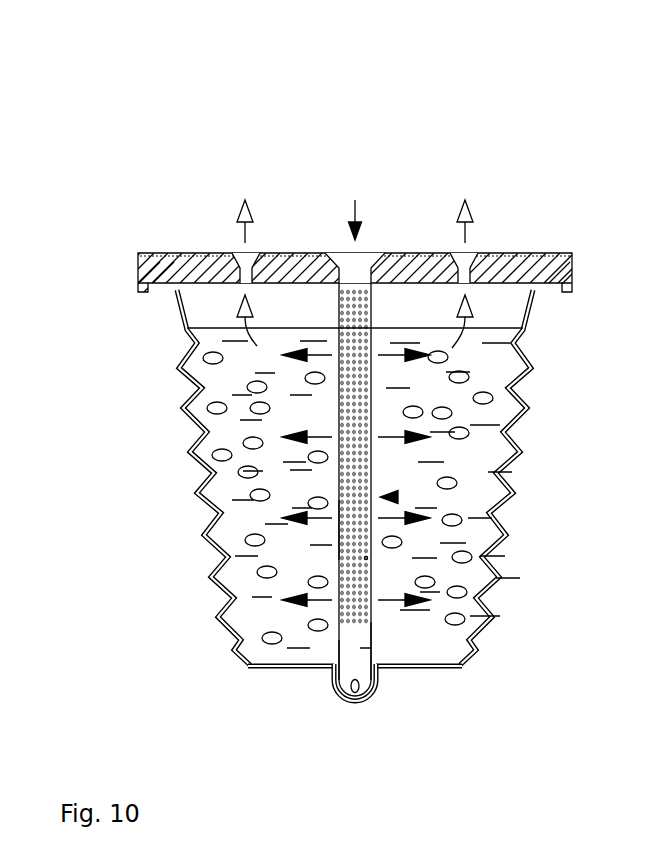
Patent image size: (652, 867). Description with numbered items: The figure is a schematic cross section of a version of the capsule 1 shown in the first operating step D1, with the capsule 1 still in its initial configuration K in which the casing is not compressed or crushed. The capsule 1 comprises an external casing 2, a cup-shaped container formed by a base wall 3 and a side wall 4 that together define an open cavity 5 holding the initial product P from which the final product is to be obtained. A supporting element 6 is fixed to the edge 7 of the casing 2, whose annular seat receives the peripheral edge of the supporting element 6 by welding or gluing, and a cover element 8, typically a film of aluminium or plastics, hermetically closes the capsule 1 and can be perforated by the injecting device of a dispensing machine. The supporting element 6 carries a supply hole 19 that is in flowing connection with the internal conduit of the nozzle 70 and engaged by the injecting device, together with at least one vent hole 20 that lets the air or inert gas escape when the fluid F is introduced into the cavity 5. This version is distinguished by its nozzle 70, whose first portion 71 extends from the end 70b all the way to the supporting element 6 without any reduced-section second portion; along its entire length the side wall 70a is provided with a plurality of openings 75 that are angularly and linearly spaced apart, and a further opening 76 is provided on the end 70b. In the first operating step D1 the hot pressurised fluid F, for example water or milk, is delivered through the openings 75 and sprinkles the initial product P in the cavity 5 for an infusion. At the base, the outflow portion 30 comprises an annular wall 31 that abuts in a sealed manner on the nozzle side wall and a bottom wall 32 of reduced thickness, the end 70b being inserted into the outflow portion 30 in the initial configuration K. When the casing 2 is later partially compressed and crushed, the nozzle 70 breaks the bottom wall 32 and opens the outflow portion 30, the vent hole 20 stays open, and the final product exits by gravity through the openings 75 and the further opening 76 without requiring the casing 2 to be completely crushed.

The capsule 1 is at (143, 145).
The external casing 2 is at (546, 463).
The base wall 3 is at (263, 670).
The side wall 4 is at (523, 410).
The cavity 5 is at (495, 305).
The supporting element 6 is at (520, 253).
The edge 7 is at (138, 270).
The cover element 8 is at (168, 253).
The supply hole 19 is at (367, 253).
The vent hole 20 is at (252, 254).
The outflow portion 30 is at (398, 697).
The annular wall 31 is at (335, 680).
The bottom wall 32 is at (353, 703).
The nozzle 70 is at (340, 413).
The side wall 70a is at (340, 530).
The end 70b is at (352, 680).
The first portion 71 is at (398, 497).
The openings 75 is at (368, 558).
The further opening 76 is at (372, 662).
The first operating step D1 is at (161, 672).
The fluid F is at (290, 440).
The initial configuration K is at (528, 713).
The initial product P is at (462, 620).